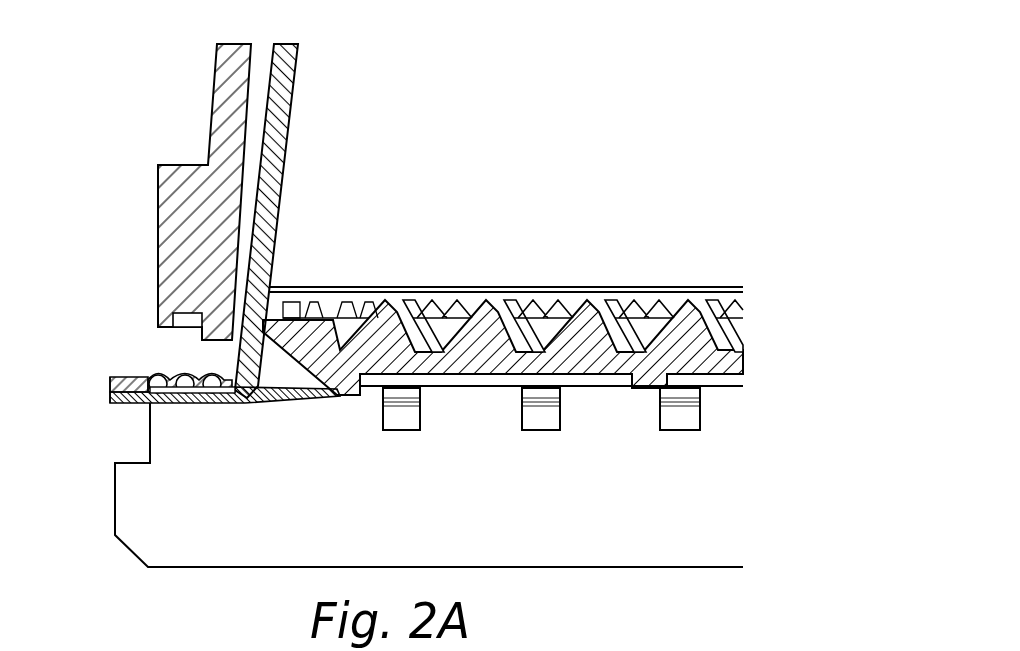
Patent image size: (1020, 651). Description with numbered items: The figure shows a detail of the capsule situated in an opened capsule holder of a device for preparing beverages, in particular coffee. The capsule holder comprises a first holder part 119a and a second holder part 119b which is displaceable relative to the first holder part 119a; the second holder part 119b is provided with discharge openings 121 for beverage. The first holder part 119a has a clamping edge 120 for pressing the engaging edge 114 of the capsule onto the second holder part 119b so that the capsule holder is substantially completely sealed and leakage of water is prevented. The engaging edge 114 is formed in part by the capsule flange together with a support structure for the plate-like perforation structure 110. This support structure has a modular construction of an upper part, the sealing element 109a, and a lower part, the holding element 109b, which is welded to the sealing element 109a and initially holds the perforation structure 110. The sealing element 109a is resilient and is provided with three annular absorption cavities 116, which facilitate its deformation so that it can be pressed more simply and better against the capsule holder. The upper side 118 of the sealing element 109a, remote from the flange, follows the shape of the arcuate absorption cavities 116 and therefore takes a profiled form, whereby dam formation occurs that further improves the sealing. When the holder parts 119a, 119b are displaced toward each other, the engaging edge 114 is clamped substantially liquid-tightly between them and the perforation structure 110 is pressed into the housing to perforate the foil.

The perforation structure 110 is at (307, 362).
The engaging edge 114 is at (93, 408).
The annular absorption cavities 116 is at (160, 404).
The upper side of sealing element 118 is at (172, 373).
The sealing element 109a is at (140, 378).
The holding element 109b is at (128, 407).
The first holder part 119a is at (158, 200).
The second holder part 119b is at (148, 496).
The clamping edge 120 is at (215, 347).
The discharge openings 121 is at (671, 470).